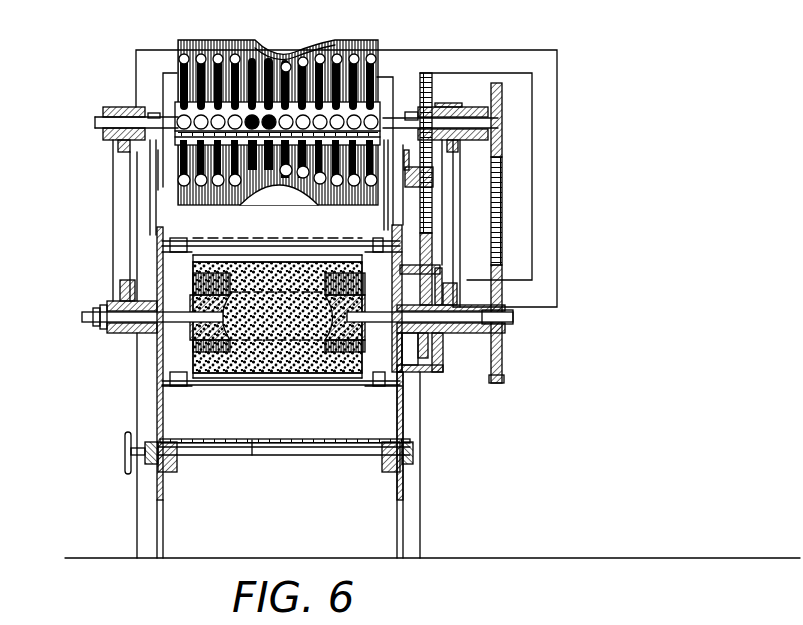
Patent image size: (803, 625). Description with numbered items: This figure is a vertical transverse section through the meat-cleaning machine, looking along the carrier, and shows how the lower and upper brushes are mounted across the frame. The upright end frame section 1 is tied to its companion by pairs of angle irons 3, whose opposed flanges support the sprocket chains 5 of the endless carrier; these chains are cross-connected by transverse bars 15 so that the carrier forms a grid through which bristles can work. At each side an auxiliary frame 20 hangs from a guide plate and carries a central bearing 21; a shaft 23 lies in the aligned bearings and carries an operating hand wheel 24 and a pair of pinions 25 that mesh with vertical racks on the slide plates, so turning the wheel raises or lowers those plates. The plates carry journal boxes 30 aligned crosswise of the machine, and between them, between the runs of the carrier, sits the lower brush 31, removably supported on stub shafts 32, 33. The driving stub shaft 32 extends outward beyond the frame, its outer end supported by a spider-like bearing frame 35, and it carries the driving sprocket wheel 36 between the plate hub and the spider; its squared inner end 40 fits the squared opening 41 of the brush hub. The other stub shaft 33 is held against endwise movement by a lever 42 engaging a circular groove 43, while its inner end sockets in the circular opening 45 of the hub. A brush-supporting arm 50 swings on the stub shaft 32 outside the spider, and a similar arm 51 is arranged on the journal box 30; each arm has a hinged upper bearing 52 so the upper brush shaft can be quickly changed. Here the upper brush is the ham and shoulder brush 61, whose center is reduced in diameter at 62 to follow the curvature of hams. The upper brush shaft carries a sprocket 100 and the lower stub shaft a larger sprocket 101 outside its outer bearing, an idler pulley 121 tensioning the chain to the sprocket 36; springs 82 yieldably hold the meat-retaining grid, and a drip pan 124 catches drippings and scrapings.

The end frame section 1 is at (150, 534).
The angle irons 3 is at (176, 260).
The chains 5 is at (534, 56).
The bars 15 is at (282, 243).
The auxiliary frame 20 is at (157, 486).
The bearing 21 is at (180, 466).
The shaft 23 is at (290, 458).
The hand wheel 24 is at (125, 444).
The pinions 25 is at (148, 466).
The journal boxes 30 is at (115, 336).
The lower brush 31 is at (325, 372).
The stub shaft 32 is at (468, 333).
The stub shaft 33 is at (88, 326).
The spider-like bearing frame 35 is at (443, 363).
The driving sprocket wheel 36 is at (445, 372).
The squared inner end 40 is at (355, 310).
The squared opening 41 is at (357, 342).
The lever 42 is at (105, 300).
The circular groove 43 is at (97, 332).
The circular opening 45 is at (202, 332).
The brush-supporting arm 50 is at (487, 211).
The brush-supporting arm 51 is at (120, 201).
The upper bearing 52 is at (117, 106).
The brush for hams and shoulders 61 is at (340, 42).
The reduced-diameter center 62 is at (270, 50).
The springs 82 is at (155, 165).
The sprocket 100 is at (503, 100).
The sprocket 101 is at (505, 354).
The idler pulley 121 is at (427, 177).
The drip pan 124 is at (252, 456).